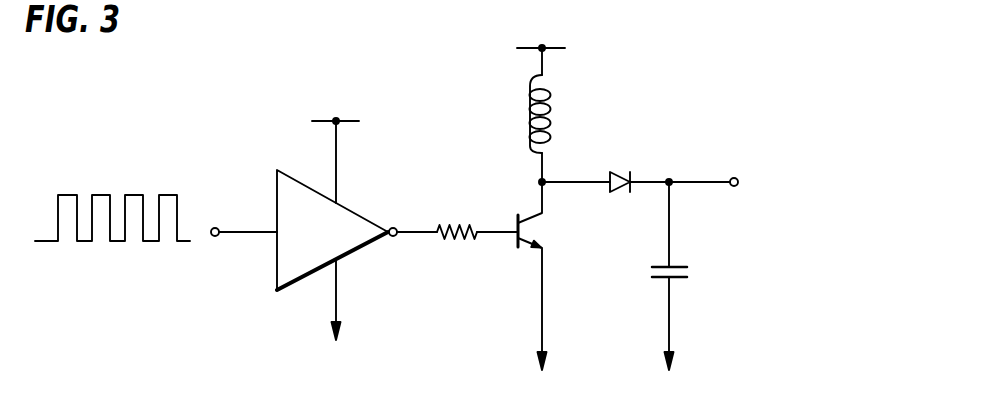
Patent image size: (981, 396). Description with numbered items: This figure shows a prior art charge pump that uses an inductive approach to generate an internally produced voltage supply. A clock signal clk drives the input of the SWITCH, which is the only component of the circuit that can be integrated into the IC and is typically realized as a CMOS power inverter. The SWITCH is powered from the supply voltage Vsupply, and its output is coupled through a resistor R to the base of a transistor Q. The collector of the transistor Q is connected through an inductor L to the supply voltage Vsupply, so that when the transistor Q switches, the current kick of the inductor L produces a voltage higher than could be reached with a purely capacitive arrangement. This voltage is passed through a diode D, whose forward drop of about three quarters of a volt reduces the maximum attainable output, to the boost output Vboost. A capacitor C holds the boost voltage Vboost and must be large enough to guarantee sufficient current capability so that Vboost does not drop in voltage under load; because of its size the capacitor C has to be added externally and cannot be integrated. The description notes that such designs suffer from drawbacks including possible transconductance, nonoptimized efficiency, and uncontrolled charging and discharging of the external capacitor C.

The clock input signal clk is at (128, 207).
The switch SWITCH is at (337, 230).
The supply voltage Vsupply is at (440, 174).
The resistor R is at (457, 245).
The transistor Q is at (541, 276).
The inductor L is at (553, 115).
The diode D is at (636, 182).
The boost voltage Vboost is at (768, 169).
The capacitor C is at (673, 276).